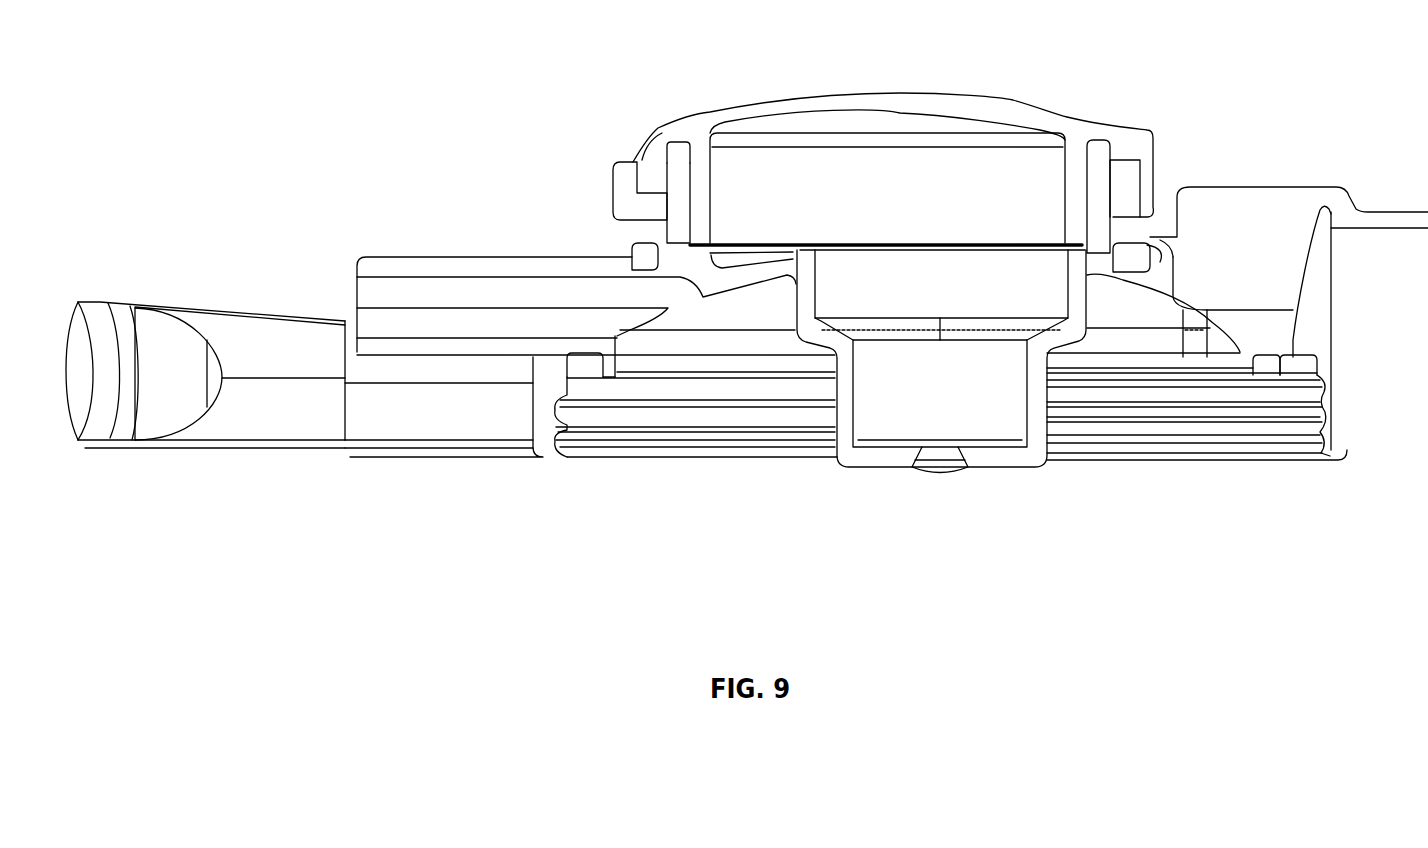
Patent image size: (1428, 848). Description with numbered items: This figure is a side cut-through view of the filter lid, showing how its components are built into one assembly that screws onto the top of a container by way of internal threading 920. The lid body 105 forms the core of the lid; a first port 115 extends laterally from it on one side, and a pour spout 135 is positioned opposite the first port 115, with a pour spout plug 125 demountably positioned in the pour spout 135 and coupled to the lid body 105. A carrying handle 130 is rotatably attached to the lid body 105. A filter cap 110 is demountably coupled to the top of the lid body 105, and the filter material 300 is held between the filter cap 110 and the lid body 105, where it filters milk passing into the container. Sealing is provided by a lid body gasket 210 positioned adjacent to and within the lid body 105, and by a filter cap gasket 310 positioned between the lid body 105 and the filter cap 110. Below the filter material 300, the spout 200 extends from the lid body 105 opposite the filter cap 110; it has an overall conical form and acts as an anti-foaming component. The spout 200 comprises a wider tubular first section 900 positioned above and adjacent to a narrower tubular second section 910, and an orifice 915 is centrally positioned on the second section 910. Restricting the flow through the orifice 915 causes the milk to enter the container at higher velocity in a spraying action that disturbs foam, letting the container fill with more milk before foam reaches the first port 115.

The lid body 105 is at (537, 458).
The filter cap 110 is at (905, 90).
The first port 115 is at (470, 252).
The pour spout plug 125 is at (1338, 186).
The carrying handle 130 is at (148, 300).
The pour spout 135 is at (1333, 300).
The spout 200 is at (843, 468).
The lid body gasket 210 is at (580, 352).
The filter material 300 is at (940, 243).
The filter cap gasket 310 is at (678, 140).
The first section 900 is at (958, 292).
The second section 910 is at (958, 400).
The orifice 915 is at (940, 476).
The internal threading 920 is at (1193, 465).